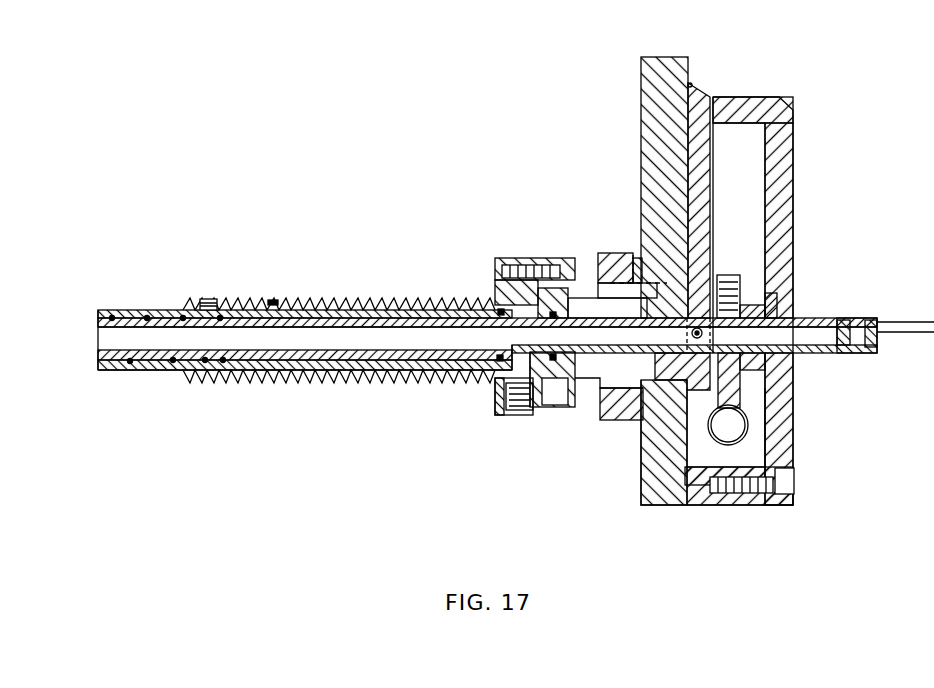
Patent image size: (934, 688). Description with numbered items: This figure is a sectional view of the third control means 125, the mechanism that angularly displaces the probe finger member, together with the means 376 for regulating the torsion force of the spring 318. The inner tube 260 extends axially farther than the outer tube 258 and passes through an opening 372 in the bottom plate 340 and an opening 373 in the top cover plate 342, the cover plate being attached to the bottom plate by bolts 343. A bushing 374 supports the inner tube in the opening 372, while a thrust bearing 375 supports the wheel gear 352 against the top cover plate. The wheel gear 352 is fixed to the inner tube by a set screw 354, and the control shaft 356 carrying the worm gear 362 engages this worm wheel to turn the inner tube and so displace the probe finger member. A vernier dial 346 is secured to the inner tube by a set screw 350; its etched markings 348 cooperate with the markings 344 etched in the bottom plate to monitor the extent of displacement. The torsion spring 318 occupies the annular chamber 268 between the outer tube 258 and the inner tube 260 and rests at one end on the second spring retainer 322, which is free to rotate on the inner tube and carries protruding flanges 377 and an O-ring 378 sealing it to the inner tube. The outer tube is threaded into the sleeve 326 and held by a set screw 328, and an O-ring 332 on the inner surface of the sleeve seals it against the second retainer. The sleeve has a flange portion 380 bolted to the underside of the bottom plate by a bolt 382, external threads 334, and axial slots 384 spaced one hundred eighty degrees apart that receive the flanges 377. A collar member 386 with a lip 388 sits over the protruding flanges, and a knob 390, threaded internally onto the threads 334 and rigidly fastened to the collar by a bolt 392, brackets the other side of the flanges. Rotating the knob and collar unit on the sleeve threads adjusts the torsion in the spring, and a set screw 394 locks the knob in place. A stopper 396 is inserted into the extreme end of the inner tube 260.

The third control means 125 is at (754, 321).
The outer tube member 258 is at (168, 310).
The inner tube 260 is at (106, 318).
The annular chamber 268 is at (139, 316).
The torsion spring 318 is at (128, 372).
The second spring retainer 322 is at (385, 320).
The sleeve 326 is at (323, 300).
The set screw 328 is at (207, 299).
The O-ring 332 is at (274, 300).
The threads 334 is at (243, 298).
The bottom plate 340 is at (658, 57).
The top cover plate 342 is at (793, 142).
The bolts 343 is at (738, 495).
The markings 344 is at (688, 72).
The vernier dial 346 is at (713, 195).
The etched markings 348 is at (705, 95).
The set screw 350 is at (718, 270).
The wheel gear 352 is at (735, 385).
The set screw 354 is at (772, 280).
The control shaft 356 is at (735, 428).
The worm gear 362 is at (716, 456).
The opening 372 is at (647, 460).
The opening 373 is at (800, 354).
The bushing 374 is at (643, 427).
The thrust bearing 375 is at (794, 298).
The means for regulating torsion force 376 is at (343, 345).
The protruding flanges 377 is at (562, 408).
The O-ring 378 is at (535, 400).
The flange portion 380 is at (633, 253).
The bolt 382 is at (617, 250).
The slots 384 is at (592, 300).
The collar member 386 is at (558, 258).
The lip 388 is at (575, 290).
The knob 390 is at (515, 260).
The bolt 392 is at (497, 274).
The set screw 394 is at (496, 400).
The stopper 396 is at (878, 340).